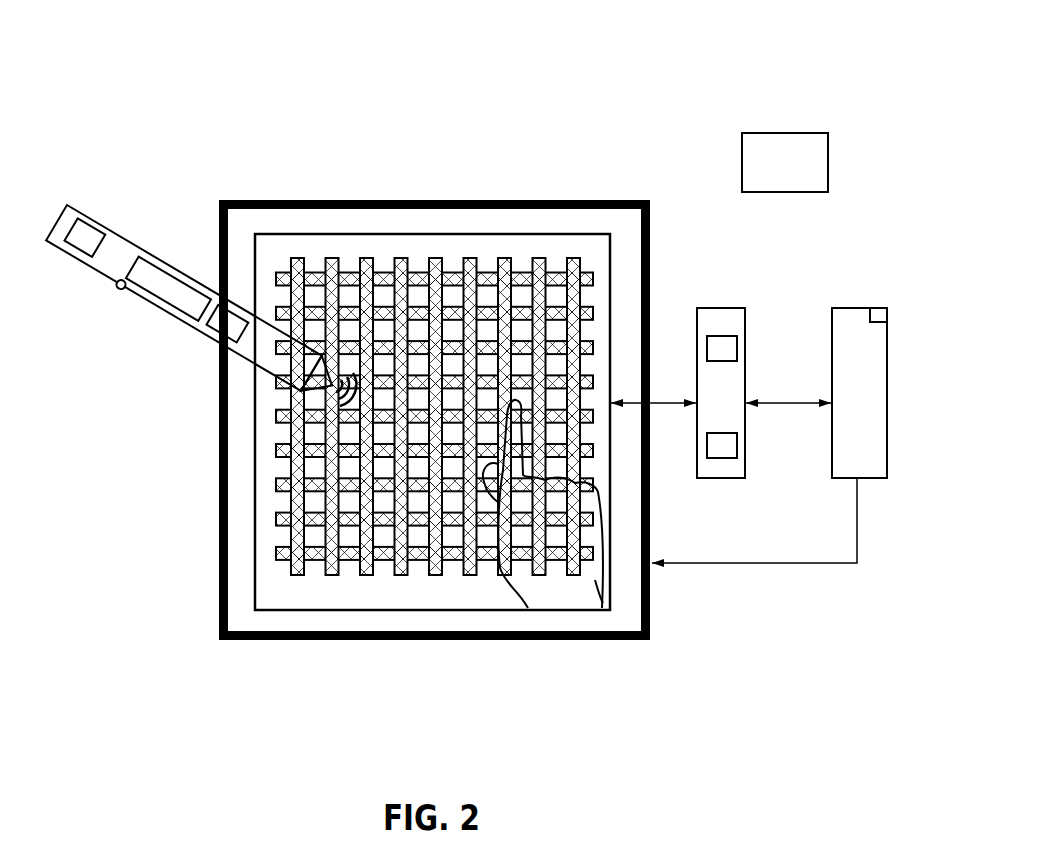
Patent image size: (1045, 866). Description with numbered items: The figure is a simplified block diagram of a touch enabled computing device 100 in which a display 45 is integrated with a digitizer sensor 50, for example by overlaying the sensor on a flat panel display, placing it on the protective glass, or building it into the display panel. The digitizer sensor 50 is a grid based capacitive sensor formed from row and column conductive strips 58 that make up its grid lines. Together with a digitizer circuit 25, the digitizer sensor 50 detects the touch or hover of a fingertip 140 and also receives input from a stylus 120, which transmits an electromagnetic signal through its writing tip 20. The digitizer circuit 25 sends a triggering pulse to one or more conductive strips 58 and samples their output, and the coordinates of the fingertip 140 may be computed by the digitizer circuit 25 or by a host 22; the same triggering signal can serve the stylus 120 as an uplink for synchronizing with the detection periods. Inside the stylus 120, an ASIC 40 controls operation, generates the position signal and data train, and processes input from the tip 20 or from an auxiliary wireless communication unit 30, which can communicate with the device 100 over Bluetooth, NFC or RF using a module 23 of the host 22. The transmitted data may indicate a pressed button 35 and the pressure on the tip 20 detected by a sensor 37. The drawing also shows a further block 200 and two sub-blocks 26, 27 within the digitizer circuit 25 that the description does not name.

The touch enabled computing device 100 is at (471, 332).
The display 45 is at (566, 200).
The digitizer sensor 50 is at (612, 287).
The conductive strips 58 is at (500, 259).
The writing tip 20 is at (351, 362).
The stylus 120 is at (193, 302).
The auxiliary wireless communication unit 30 is at (84, 237).
The button 35 is at (121, 284).
The ASIC 40 is at (168, 289).
The sensor 37 is at (228, 324).
The fingertip 140 is at (510, 404).
The host device 200 is at (829, 150).
The digitizer circuit 25 is at (752, 352).
The controller memory 26 is at (737, 348).
The controller processor 27 is at (737, 448).
The host 22 is at (889, 354).
The module 23 is at (882, 332).